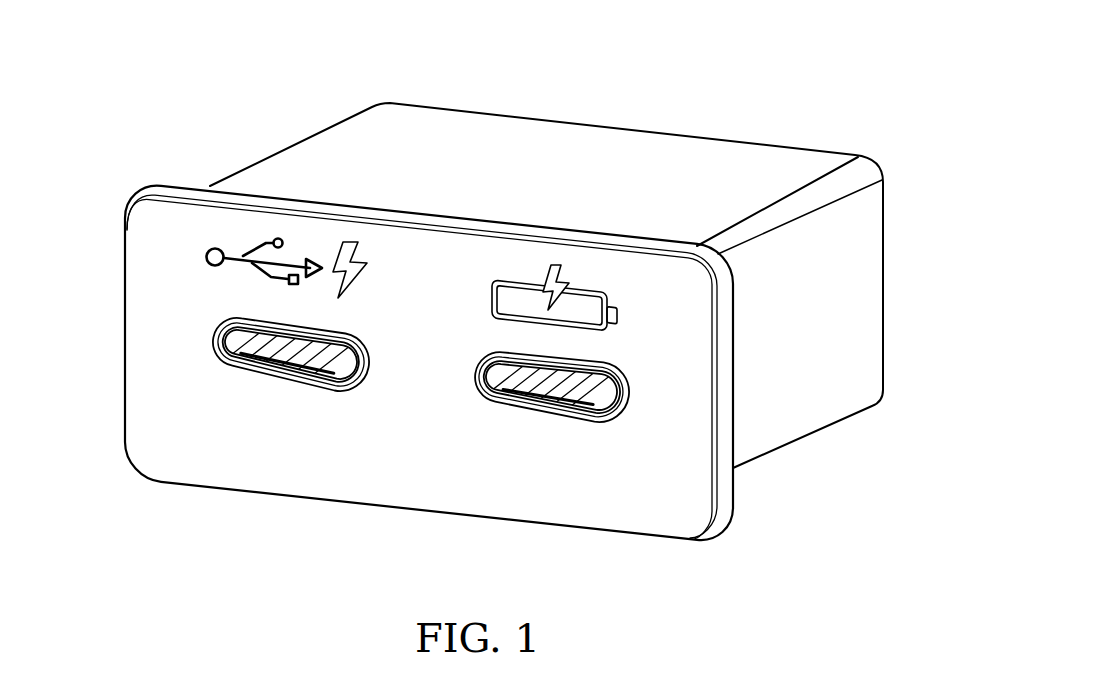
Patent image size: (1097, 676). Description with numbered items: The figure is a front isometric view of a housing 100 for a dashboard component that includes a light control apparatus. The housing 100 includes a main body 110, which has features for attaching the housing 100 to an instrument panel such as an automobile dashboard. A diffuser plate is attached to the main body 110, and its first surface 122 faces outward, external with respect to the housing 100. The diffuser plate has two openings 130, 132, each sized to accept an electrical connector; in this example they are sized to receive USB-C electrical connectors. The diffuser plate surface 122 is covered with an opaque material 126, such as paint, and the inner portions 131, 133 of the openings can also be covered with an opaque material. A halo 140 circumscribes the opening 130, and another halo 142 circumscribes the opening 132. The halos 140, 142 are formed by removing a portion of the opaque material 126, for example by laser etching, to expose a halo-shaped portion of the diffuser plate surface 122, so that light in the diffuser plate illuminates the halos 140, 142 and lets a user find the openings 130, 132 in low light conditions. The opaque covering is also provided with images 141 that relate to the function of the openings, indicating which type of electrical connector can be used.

The housing 100 is at (890, 136).
The main body 110 is at (800, 380).
The first surface 122 is at (643, 480).
The opaque material 126 is at (343, 463).
The opening 130 is at (250, 377).
The inner portion of the opening 131 is at (222, 360).
The opening 132 is at (587, 412).
The inner portion of the opening 133 is at (485, 407).
The halo 140 is at (332, 332).
The images 141 is at (247, 250).
The halo 142 is at (583, 360).